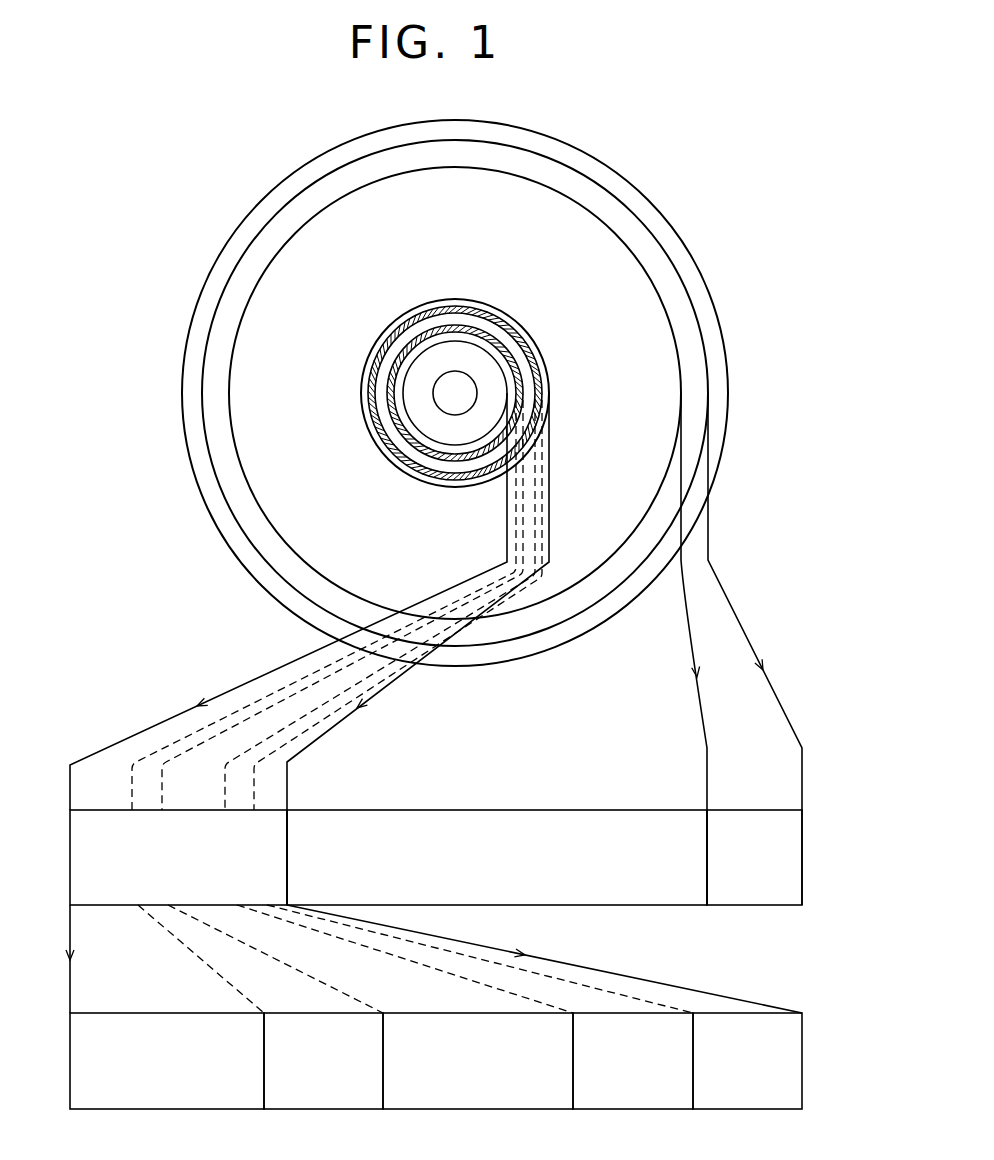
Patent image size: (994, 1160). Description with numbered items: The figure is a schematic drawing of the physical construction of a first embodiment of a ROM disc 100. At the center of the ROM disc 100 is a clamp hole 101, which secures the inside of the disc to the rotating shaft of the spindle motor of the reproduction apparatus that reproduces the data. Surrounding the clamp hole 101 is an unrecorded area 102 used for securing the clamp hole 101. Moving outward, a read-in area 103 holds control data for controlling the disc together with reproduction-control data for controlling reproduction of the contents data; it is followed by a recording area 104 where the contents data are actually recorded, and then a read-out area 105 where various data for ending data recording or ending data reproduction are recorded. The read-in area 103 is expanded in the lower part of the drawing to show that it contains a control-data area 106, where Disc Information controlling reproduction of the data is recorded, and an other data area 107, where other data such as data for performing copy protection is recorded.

The ROM disc 100 is at (610, 168).
The clamp hole 101 is at (444, 387).
The unrecorded area 102 is at (428, 365).
The read-in area 103 is at (412, 477).
The recording area 104 is at (640, 312).
The read-out area 105 is at (625, 567).
The control-data area 106 is at (312, 1111).
The other data area 107 is at (157, 1111).